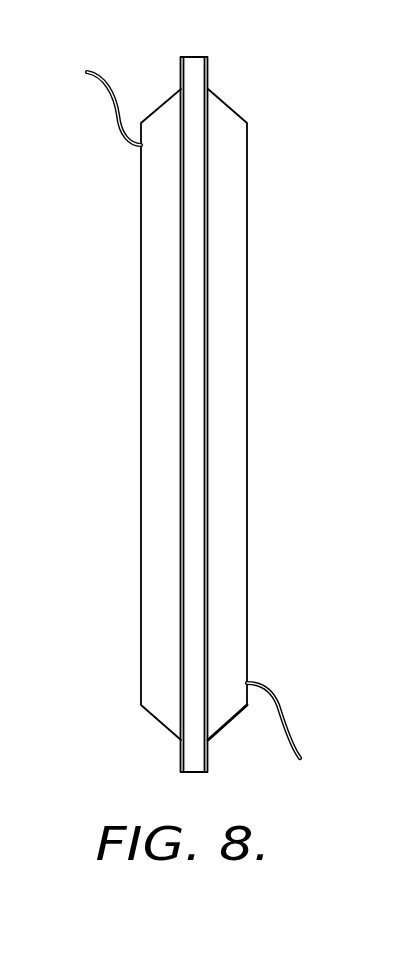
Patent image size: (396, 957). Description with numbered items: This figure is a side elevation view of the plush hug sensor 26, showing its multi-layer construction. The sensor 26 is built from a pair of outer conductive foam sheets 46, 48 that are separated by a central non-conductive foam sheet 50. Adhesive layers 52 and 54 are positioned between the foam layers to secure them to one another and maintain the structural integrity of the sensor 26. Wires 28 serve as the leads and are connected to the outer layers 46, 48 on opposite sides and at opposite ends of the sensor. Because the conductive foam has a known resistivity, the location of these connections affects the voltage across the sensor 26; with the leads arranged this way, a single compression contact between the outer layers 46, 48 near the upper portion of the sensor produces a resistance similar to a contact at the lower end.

The plush hug sensor 26 is at (195, 57).
The wires 28 is at (111, 93).
The conductive foam sheet 46 is at (150, 225).
The conductive foam sheet 48 is at (226, 366).
The non-conductive foam sheet 50 is at (190, 398).
The adhesive layer 52 is at (180, 314).
The adhesive layer 54 is at (207, 272).